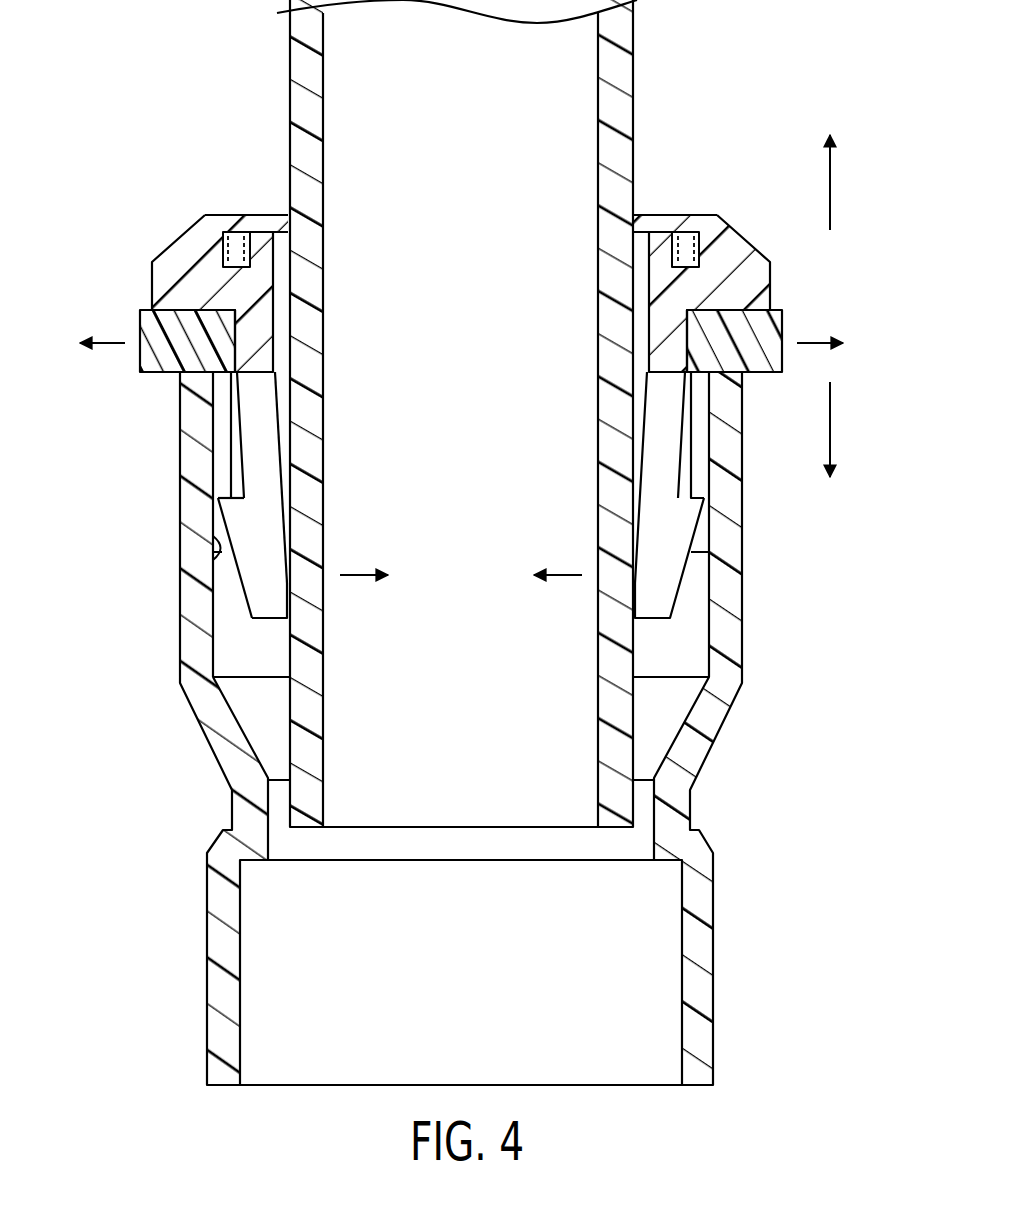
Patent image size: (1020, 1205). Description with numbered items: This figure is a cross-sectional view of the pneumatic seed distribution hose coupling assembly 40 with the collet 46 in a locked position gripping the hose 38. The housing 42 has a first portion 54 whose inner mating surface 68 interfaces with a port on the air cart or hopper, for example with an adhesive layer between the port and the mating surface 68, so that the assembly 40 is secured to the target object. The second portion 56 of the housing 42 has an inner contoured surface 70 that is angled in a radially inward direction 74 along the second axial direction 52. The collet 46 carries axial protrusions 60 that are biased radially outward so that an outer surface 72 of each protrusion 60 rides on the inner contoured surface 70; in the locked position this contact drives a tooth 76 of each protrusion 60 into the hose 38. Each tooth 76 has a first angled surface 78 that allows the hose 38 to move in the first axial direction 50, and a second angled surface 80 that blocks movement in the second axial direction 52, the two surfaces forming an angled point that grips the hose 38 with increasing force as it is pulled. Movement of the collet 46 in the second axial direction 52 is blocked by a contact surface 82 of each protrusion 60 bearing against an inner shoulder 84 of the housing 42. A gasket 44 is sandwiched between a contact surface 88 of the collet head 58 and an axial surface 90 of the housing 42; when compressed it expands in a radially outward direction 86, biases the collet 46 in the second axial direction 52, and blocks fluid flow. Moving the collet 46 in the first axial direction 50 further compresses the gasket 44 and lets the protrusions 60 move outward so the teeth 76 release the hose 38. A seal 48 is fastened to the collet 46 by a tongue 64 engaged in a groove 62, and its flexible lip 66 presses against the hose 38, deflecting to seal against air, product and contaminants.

The hose 38 is at (290, 62).
The hose coupling assembly 40 is at (226, 124).
The housing 42 is at (745, 665).
The gasket 44 is at (145, 352).
The collet 46 is at (150, 290).
The seal 48 is at (222, 213).
The first axial direction 50 is at (832, 423).
The second axial direction 52 is at (832, 188).
The first portion 54 is at (207, 988).
The second portion 56 is at (185, 517).
The collet head 58 is at (742, 250).
The axial protrusions 60 is at (248, 435).
The groove 62 is at (230, 262).
The tongue 64 is at (240, 232).
The lip 66 is at (645, 213).
The inner mating surface 68 is at (242, 985).
The inner contoured surface 70 is at (220, 552).
The outer surface 72 is at (218, 497).
The radially inward direction 74 is at (362, 578).
The tooth 76 is at (290, 587).
The first angled surface 78 is at (635, 583).
The second angled surface 80 is at (648, 620).
The contact surface 82 is at (240, 493).
The inner shoulder 84 is at (220, 502).
The radially outward direction 86 is at (108, 340).
The contact surface 88 is at (207, 325).
The axial surface 90 is at (207, 355).